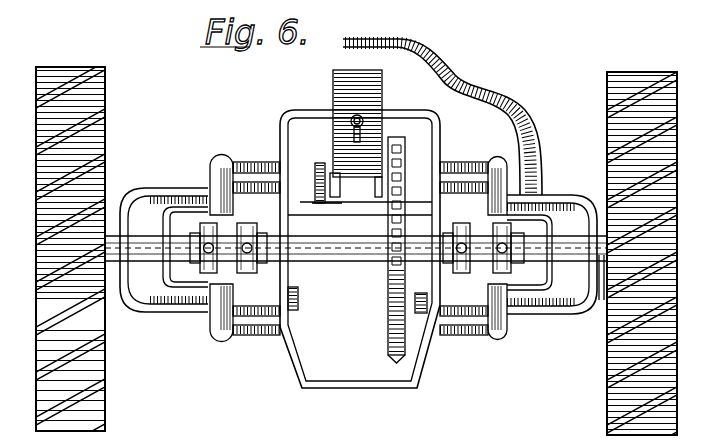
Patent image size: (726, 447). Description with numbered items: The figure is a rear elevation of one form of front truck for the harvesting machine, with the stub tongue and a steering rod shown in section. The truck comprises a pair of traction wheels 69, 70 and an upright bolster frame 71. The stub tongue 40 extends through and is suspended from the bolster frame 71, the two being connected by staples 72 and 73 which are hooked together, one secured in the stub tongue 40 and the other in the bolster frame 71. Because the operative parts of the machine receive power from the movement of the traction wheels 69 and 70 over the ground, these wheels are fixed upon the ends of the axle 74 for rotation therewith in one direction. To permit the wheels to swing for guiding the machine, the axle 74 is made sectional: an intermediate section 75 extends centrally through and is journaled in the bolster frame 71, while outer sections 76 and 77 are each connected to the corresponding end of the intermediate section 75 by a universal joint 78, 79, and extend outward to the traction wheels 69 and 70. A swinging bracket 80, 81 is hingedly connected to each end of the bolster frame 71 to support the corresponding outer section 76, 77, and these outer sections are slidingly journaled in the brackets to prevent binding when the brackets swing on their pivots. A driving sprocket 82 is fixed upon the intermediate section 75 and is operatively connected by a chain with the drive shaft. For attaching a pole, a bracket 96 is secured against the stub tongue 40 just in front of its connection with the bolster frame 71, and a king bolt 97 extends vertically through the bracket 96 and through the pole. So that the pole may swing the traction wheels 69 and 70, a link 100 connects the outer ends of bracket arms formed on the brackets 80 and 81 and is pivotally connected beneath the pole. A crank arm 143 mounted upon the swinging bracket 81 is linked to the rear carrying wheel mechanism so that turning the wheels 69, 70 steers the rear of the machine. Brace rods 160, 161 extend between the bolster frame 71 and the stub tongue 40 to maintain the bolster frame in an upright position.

The traction wheel 69 is at (68, 68).
The traction wheel 70 is at (677, 353).
The stub tongue 40 is at (382, 69).
The crank arm 143 is at (528, 70).
The staple 73 is at (348, 122).
The staple 72 is at (354, 137).
The king bolt 97 is at (332, 173).
The bracket 96 is at (333, 192).
The axle 74 is at (347, 221).
The link 100 is at (405, 205).
The swinging bracket 80 is at (172, 196).
The swinging bracket 81 is at (568, 200).
The outer axle section 76 is at (182, 252).
The universal joint 78 is at (221, 238).
The universal joint 79 is at (483, 242).
The intermediate axle section 75 is at (255, 262).
The bolster frame 71 is at (424, 369).
The brace rod 160 is at (298, 295).
The driving sprocket 82 is at (390, 310).
The brace rod 161 is at (420, 316).
The outer axle section 77 is at (601, 292).